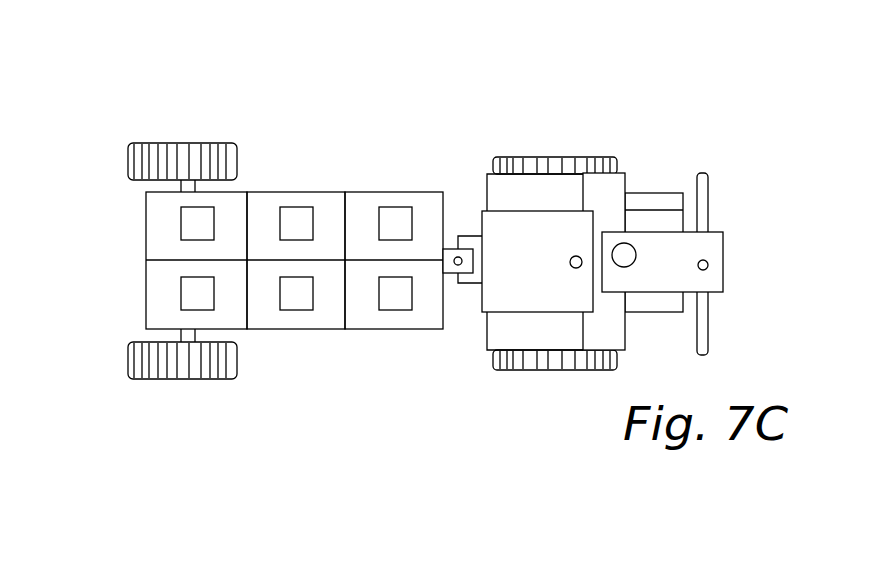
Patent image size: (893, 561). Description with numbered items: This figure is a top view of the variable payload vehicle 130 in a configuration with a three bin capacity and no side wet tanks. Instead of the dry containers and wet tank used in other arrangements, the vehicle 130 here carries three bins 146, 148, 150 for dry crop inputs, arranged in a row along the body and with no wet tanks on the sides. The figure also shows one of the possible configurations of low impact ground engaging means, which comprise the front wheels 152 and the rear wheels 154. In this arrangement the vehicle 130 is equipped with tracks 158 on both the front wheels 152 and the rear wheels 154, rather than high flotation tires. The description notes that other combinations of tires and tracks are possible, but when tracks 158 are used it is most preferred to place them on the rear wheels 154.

The variable payload vehicle 130 is at (94, 208).
The first body block 146 is at (160, 247).
The second body block 148 is at (258, 197).
The third body block 150 is at (357, 197).
The front wheels 152 is at (548, 143).
The rear wheels 154 is at (169, 133).
The tracks 158 is at (189, 143).